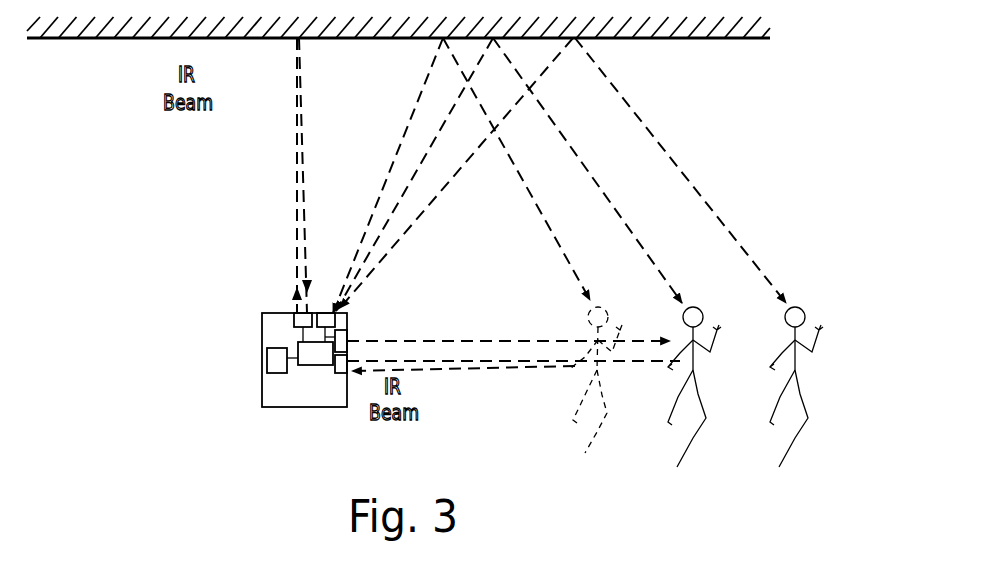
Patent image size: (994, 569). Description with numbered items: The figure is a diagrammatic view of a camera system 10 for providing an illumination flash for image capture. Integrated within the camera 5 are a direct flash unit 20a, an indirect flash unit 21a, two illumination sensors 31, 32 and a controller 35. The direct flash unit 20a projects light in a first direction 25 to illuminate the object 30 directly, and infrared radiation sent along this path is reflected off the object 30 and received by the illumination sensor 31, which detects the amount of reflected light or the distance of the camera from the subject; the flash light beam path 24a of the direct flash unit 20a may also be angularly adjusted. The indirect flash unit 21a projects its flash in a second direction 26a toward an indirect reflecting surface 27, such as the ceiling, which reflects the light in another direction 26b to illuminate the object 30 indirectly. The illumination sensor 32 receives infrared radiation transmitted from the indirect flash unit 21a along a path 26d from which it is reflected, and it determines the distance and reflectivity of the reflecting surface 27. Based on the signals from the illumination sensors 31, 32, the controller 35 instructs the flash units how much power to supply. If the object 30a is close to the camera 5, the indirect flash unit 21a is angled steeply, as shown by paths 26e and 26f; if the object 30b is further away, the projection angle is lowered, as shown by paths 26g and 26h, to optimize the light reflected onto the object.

The camera 5 is at (290, 397).
The camera system 10 is at (108, 294).
The direct flash unit 20a is at (345, 328).
The indirect flash unit 21a is at (322, 313).
The flash light beam path 24a is at (473, 371).
The first direction 25 is at (495, 338).
The second direction 26a is at (432, 155).
The another direction 26b is at (570, 144).
The path 26d is at (295, 190).
The path 26e is at (415, 108).
The path 26f is at (512, 172).
The path 26g is at (410, 232).
The path 26h is at (700, 184).
The indirect reflecting surface 27 is at (80, 38).
The object 30 is at (694, 403).
The object 30a is at (598, 396).
The object 30b is at (796, 396).
The illumination sensor 31 is at (343, 375).
The illumination sensor 32 is at (294, 315).
The controller 35 is at (262, 360).